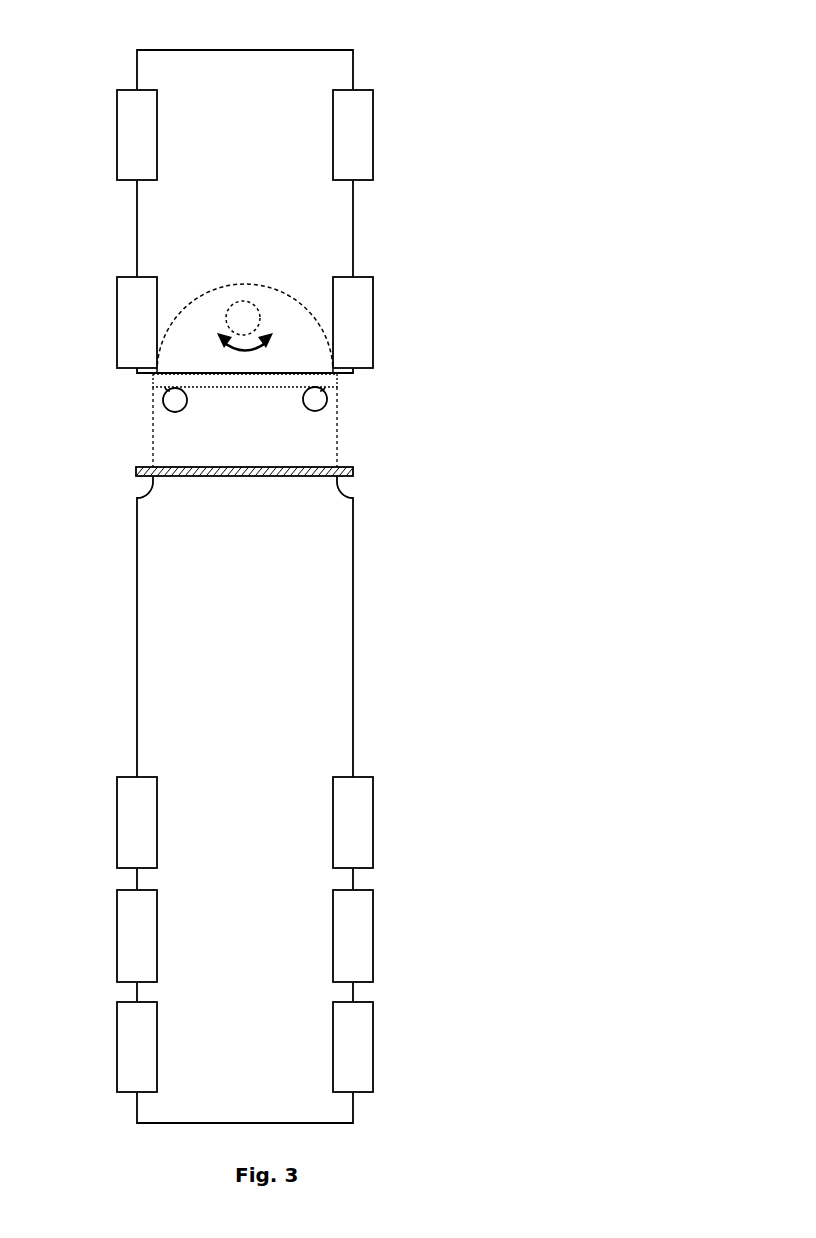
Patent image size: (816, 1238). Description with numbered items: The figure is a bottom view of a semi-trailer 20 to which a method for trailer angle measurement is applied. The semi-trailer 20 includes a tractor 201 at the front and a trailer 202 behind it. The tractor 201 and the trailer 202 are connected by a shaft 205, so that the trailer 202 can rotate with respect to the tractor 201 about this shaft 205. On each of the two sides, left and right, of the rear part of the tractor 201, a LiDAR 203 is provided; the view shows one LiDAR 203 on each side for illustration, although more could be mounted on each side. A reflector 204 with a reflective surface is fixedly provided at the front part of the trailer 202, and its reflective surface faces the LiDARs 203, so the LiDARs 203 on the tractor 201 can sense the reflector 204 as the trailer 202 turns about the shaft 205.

The semi-trailer 20 is at (392, 145).
The tractor 201 is at (332, 242).
The trailer 202 is at (315, 568).
The LiDAR 203 is at (172, 400).
The reflector 204 is at (353, 470).
The shaft 205 is at (238, 308).